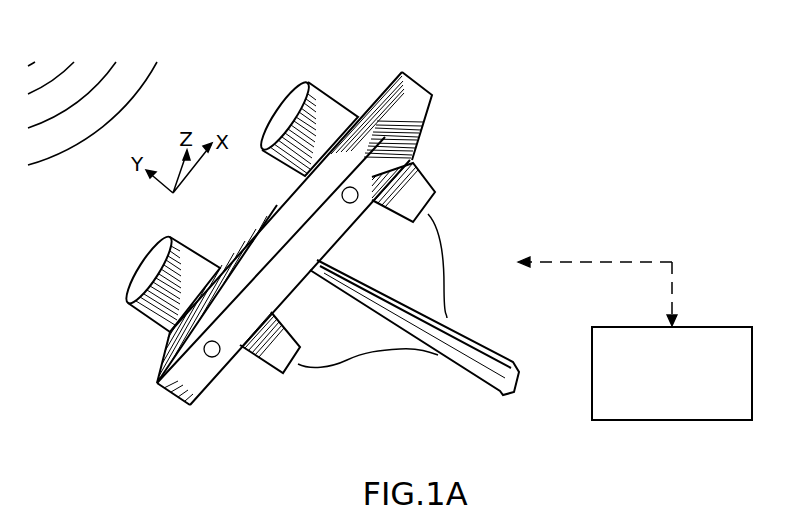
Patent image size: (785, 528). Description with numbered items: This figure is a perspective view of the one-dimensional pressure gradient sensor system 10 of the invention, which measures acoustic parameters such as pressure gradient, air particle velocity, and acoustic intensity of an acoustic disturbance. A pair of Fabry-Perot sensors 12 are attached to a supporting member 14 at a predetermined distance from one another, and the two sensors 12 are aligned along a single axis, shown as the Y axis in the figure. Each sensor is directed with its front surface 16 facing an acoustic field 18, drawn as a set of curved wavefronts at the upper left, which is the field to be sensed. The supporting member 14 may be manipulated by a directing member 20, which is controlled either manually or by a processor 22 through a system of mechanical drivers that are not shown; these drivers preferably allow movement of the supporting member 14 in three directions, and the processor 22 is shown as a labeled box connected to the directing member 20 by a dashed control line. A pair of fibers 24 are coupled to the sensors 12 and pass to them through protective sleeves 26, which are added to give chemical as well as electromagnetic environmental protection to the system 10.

The system 10 is at (605, 152).
The sensors 12 is at (338, 102).
The supporting member 14 is at (370, 160).
The front surfaces 16 is at (279, 112).
The acoustic field 18 is at (58, 138).
The directing member 20 is at (500, 352).
The processor 22 is at (710, 326).
The fibers 24 is at (443, 267).
The protective sleeves 26 is at (423, 176).